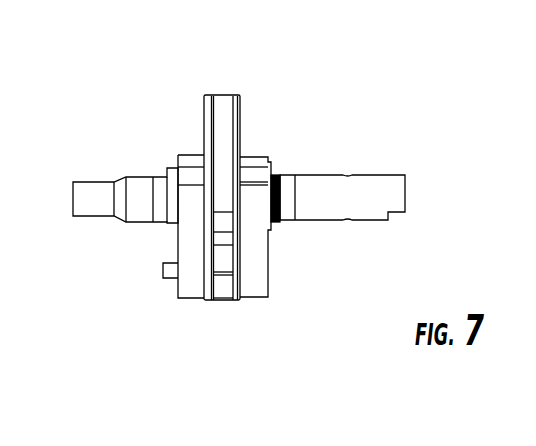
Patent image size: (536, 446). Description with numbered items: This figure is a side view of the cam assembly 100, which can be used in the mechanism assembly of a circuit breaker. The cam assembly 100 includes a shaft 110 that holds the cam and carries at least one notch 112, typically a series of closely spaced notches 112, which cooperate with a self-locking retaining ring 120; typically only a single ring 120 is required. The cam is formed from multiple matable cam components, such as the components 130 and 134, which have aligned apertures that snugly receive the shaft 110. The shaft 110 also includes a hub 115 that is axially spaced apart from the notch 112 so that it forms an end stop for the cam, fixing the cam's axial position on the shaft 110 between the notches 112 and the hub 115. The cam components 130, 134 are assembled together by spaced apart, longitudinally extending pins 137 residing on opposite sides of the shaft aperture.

The cam assembly 100 is at (192, 52).
The shaft 110 is at (367, 207).
The notch 112 is at (279, 207).
The hub 115 is at (172, 222).
The self-locking retaining ring 120 is at (273, 164).
The cam component 130 is at (193, 288).
The cam component 134 is at (257, 290).
The pin 137 is at (227, 290).